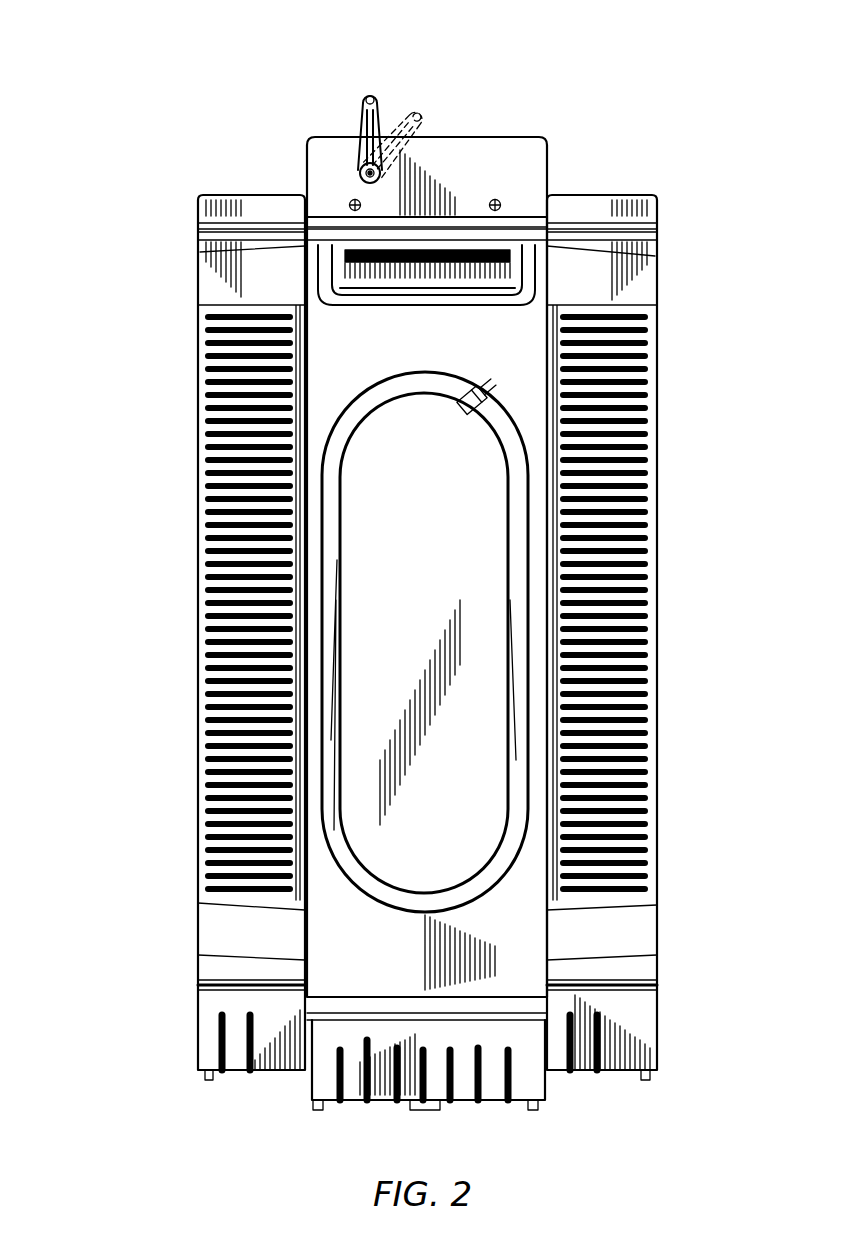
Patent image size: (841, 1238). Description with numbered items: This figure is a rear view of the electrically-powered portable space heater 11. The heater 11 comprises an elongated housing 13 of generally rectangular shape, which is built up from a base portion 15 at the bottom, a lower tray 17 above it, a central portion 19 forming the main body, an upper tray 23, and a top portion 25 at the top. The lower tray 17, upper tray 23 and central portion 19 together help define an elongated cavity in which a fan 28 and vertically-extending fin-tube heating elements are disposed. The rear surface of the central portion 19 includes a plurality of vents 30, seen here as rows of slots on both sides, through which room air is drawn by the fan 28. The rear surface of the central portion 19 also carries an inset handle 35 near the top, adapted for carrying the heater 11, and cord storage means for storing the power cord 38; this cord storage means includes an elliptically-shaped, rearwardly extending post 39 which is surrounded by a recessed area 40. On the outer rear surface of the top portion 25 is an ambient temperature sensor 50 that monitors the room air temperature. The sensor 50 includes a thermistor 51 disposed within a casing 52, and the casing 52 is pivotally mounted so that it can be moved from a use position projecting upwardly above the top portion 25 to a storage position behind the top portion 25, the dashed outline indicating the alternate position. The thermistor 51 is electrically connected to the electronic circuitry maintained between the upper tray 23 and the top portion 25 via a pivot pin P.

The heater 11 is at (703, 129).
The housing 13 is at (150, 448).
The base portion 15 is at (637, 1008).
The lower tray 17 is at (636, 988).
The central portion 19 is at (605, 938).
The upper tray 23 is at (657, 229).
The top portion 25 is at (530, 167).
The fan 28 is at (590, 512).
The vents 30 is at (207, 572).
The inset handle 35 is at (425, 280).
The power cord 38 is at (478, 412).
The post 39 is at (447, 793).
The recessed area 40 is at (400, 897).
The sensor 50 is at (362, 78).
The thermistor 51 is at (374, 96).
The casing 52 is at (362, 160).
The pivot pin P is at (362, 172).